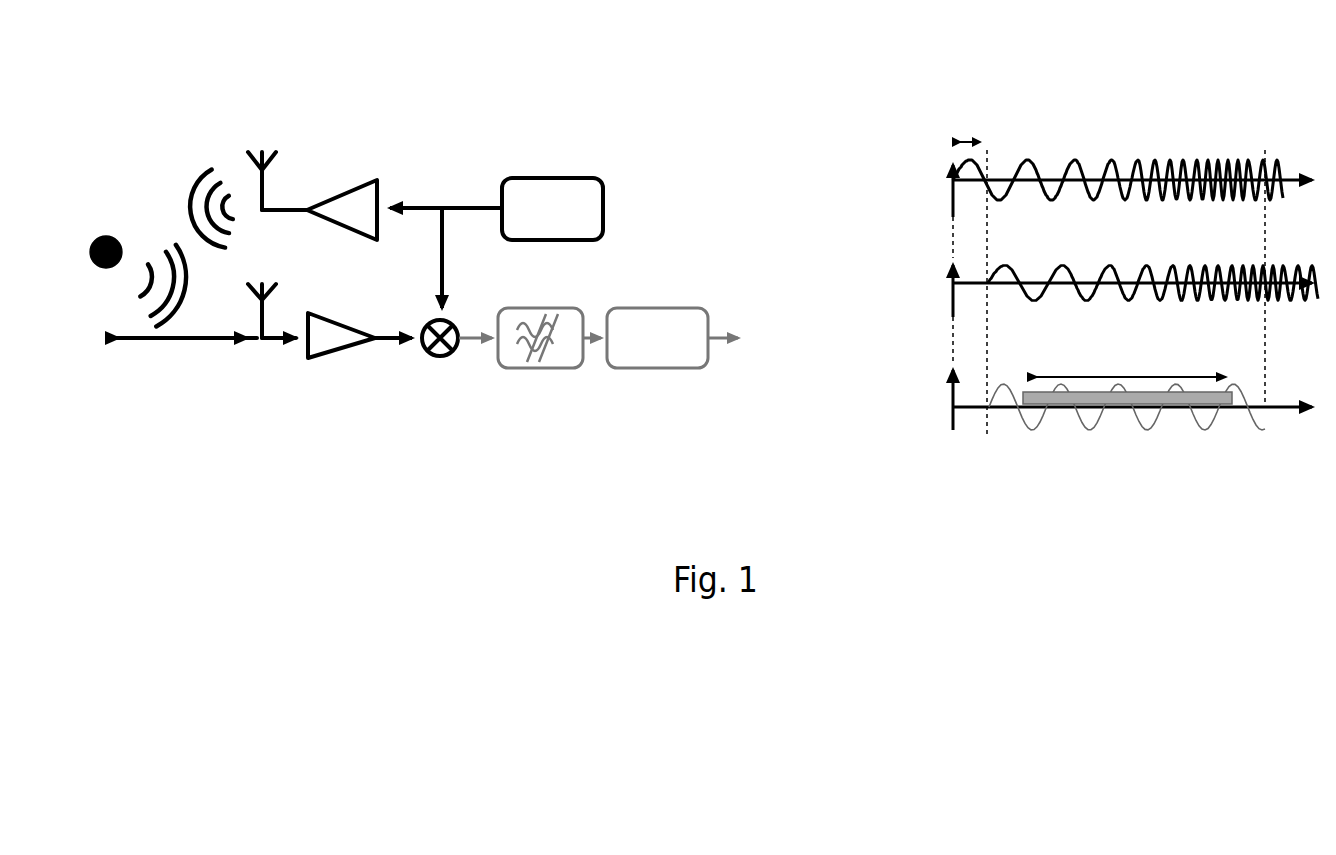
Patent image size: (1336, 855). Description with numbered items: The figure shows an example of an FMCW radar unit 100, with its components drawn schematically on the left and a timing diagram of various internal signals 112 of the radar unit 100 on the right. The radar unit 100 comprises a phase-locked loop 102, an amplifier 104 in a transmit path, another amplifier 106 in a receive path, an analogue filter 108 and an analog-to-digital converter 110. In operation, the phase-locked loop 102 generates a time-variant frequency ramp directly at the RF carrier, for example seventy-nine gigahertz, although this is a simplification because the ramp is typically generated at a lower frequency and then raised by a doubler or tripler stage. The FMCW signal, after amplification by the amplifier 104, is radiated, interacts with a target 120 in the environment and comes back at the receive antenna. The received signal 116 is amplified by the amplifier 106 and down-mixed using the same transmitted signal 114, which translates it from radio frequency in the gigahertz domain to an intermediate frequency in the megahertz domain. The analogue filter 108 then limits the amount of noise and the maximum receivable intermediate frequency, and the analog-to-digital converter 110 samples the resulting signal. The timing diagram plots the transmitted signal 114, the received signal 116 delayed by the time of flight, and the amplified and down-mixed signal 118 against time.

The FMCW radar unit 100 is at (254, 94).
The phase-locked loop 102 is at (530, 178).
The amplifier 104 is at (365, 181).
The amplifier 106 is at (330, 362).
The analogue filter 108 is at (536, 370).
The analog-to-digital converter 110 is at (645, 370).
The internal signals 112 is at (974, 86).
The transmitted signal 114 is at (1086, 192).
The received signal 116 is at (1081, 290).
The amplified and down-mixed signal 118 is at (1076, 416).
The target 120 is at (104, 234).